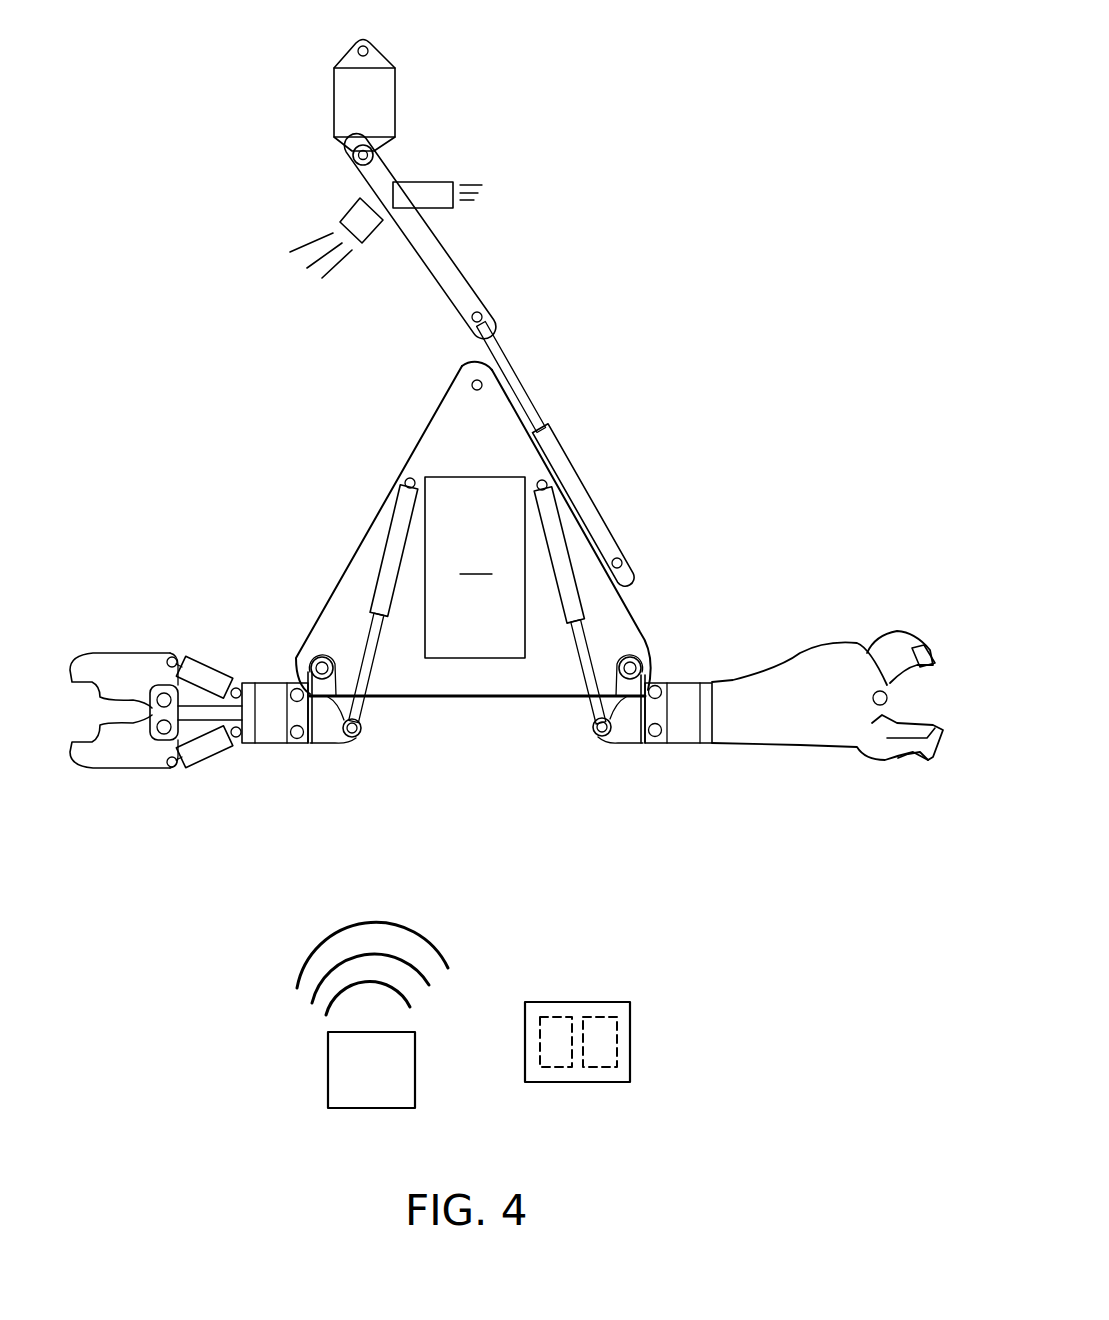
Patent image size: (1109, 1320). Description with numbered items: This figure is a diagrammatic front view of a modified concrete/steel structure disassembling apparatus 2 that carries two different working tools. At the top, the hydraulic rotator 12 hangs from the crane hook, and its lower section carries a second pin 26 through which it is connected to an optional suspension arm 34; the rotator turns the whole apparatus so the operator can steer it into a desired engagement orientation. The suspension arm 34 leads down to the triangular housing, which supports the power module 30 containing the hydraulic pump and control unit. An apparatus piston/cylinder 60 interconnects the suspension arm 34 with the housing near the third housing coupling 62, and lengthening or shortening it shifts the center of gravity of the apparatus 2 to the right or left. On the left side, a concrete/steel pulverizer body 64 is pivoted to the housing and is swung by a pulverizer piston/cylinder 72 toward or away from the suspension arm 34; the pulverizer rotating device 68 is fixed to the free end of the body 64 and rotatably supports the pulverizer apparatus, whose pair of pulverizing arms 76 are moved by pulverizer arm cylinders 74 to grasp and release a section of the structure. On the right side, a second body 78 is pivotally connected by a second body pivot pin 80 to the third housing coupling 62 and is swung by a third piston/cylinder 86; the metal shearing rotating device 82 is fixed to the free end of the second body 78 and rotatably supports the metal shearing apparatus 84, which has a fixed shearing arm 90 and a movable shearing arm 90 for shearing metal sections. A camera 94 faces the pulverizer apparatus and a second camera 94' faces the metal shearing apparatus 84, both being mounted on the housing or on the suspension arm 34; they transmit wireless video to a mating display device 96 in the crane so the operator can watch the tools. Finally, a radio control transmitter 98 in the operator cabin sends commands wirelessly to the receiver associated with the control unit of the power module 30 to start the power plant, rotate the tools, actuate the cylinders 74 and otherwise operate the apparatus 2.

The concrete/steel structure disassembling apparatus 2 is at (780, 290).
The hydraulic rotator 12 is at (432, 88).
The second pin 26 is at (353, 153).
The suspension arm 34 is at (410, 240).
The camera 94 is at (307, 235).
The second camera 94' is at (454, 162).
The apparatus piston/cylinder 60 is at (563, 445).
The power module 30 is at (475, 567).
The pulverizer piston/cylinder 72 is at (390, 505).
The third piston/cylinder 86 is at (553, 538).
The second body pivot pin 80 is at (638, 655).
The concrete/steel pulverizer body 64 is at (335, 740).
The second body 78 is at (608, 745).
The concrete/steel pulverizer rotating device 68 is at (265, 680).
The metal shearing rotating device 82 is at (682, 735).
The pulverizing arms 76 is at (118, 665).
The pulverizer arm cylinders 74 is at (205, 662).
The third housing coupling 62 is at (705, 657).
The metal shearing apparatus 84 is at (926, 667).
The shearing arm 90 is at (930, 653).
The display device 96 is at (608, 1003).
The radio control transmitter 98 is at (332, 1063).